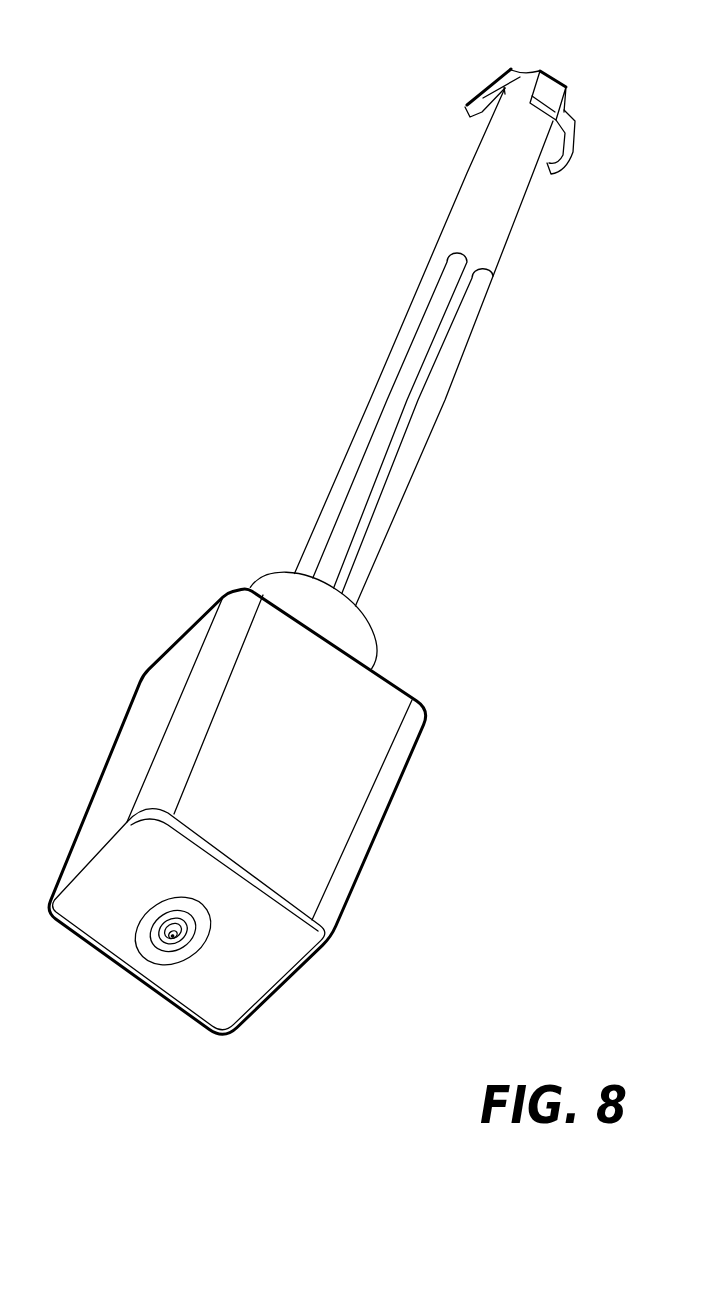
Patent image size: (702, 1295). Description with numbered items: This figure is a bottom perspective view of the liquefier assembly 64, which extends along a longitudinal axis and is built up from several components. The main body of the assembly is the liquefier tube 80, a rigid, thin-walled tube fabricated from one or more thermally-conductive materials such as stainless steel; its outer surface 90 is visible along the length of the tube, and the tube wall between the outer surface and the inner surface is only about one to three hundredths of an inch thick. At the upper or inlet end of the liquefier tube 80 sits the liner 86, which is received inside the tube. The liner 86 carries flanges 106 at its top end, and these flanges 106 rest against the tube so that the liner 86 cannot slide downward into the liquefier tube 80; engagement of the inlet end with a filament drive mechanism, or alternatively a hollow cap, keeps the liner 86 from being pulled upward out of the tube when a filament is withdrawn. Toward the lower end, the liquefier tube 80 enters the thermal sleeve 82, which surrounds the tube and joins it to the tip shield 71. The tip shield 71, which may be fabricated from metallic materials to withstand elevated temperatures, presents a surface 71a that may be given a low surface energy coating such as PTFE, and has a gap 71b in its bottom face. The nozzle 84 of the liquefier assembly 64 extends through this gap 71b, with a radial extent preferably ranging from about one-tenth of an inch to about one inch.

The liquefier assembly 64 is at (245, 317).
The tip shield 71 is at (378, 802).
The surface 71a is at (257, 973).
The gap 71b is at (178, 958).
The nozzle 84 is at (163, 932).
The thermal sleeve 82 is at (362, 644).
The liquefier tube 80 is at (419, 250).
The outer surface 90 is at (390, 368).
The liner 86 is at (452, 42).
The flanges 106 is at (471, 93).